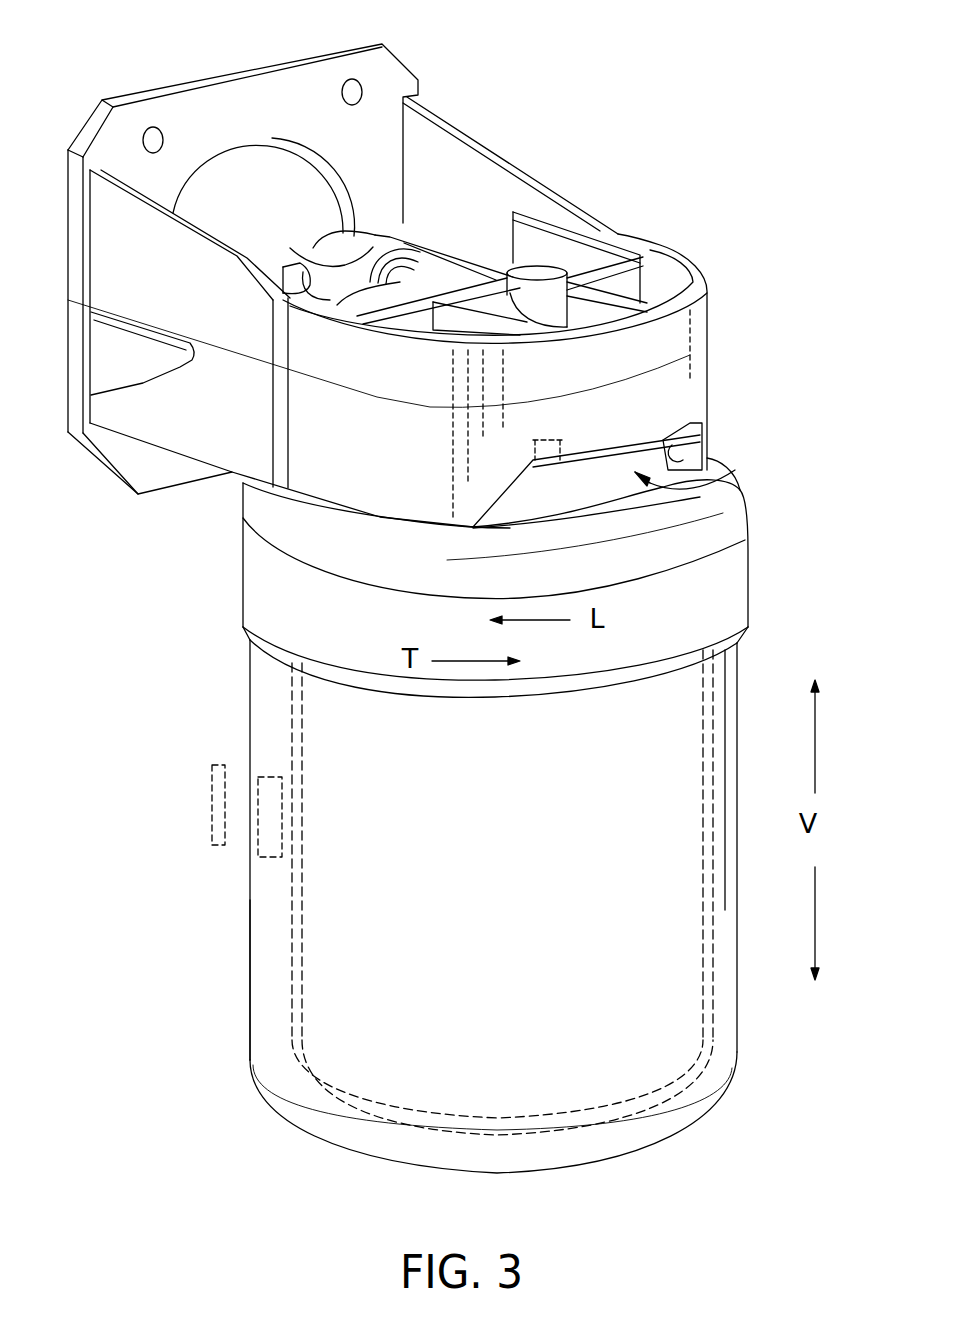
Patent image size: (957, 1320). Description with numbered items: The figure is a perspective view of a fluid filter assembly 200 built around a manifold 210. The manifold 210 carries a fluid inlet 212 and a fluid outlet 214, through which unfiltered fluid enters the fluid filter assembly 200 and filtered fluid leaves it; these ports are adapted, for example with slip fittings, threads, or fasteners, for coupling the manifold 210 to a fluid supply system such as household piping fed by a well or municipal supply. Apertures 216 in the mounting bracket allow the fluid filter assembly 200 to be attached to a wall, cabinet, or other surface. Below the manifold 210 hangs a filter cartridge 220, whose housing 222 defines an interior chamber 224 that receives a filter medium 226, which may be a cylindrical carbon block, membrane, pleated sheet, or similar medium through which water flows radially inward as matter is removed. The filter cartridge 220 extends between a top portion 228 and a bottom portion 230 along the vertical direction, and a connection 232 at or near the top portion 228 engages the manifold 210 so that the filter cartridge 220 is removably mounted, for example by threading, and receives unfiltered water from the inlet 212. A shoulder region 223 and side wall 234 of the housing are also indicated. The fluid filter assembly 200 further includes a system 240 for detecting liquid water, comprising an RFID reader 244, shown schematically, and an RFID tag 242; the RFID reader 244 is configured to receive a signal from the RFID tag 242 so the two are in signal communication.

The fluid filter assembly 200 is at (560, 105).
The manifold 210 is at (683, 347).
The fluid inlet 212 is at (313, 248).
The fluid outlet 214 is at (243, 255).
The apertures 216 is at (155, 138).
The filter cartridge 220 is at (252, 598).
The housing 222 is at (252, 977).
The housing shoulder 223 is at (740, 660).
The chamber 224 is at (704, 1065).
The filter medium 226 is at (300, 920).
The top portion 228 is at (724, 452).
The bottom portion 230 is at (693, 1124).
The connection 232 is at (668, 538).
The housing side wall 234 is at (250, 1023).
The system for detecting liquid water 240 is at (145, 788).
The RFID tag 242 is at (262, 840).
The RFID reader 244 is at (207, 777).